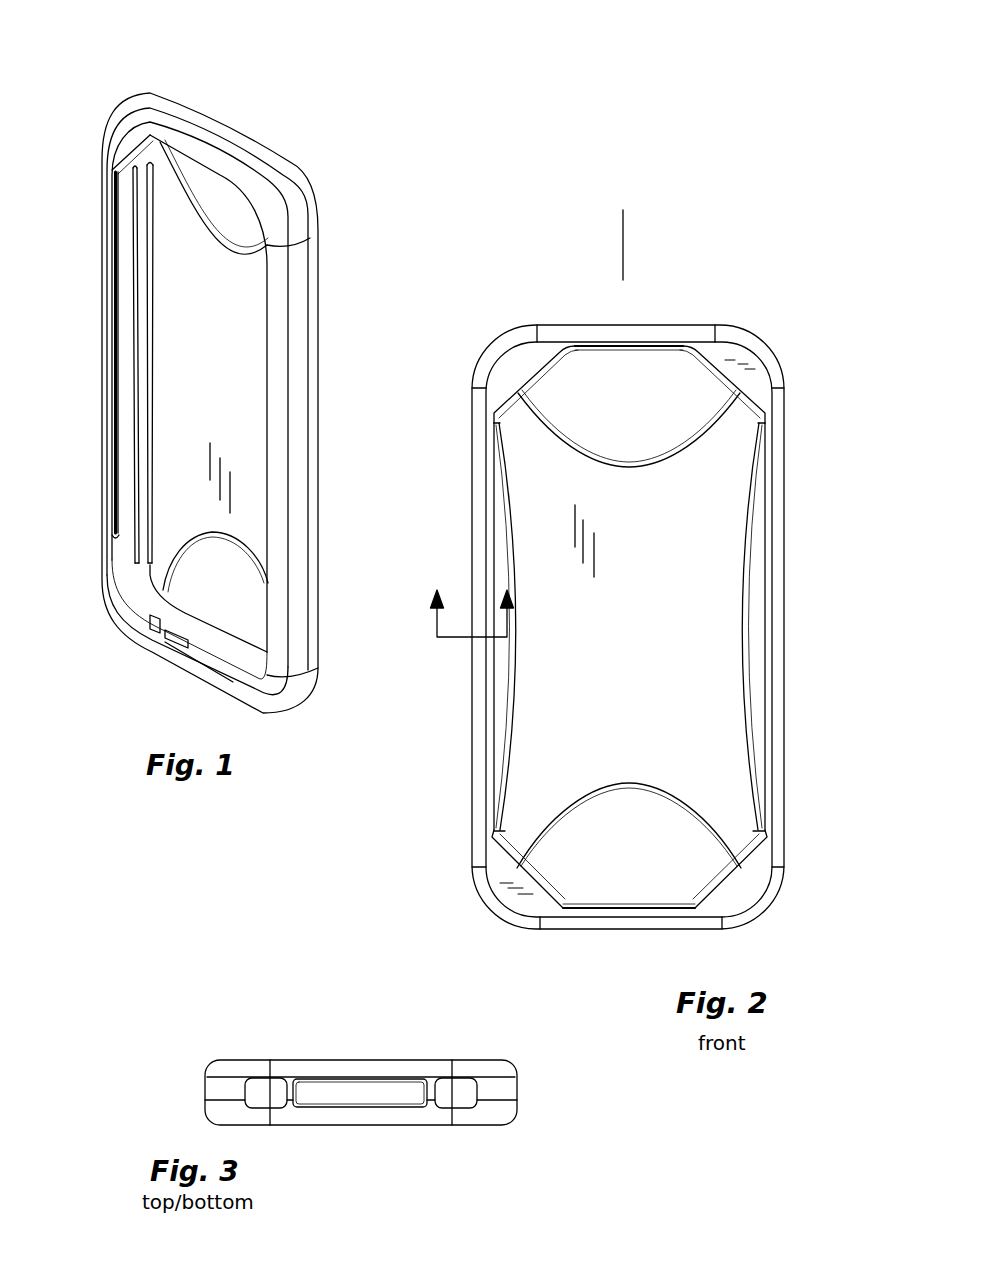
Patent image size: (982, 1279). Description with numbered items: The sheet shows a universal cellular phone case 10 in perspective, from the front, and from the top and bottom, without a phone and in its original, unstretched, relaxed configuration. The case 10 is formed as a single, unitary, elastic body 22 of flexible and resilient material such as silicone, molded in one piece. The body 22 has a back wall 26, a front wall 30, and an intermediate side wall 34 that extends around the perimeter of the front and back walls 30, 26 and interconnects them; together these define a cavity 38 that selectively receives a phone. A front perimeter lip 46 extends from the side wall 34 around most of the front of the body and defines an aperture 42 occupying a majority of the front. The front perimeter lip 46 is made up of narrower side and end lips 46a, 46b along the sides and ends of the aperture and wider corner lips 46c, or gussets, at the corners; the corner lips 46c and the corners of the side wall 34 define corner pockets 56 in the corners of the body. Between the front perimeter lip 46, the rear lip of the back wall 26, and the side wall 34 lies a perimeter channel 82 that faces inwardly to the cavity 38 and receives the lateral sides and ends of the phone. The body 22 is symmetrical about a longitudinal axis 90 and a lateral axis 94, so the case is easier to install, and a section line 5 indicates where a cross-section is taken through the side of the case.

In FIG. 2, the section line 5 is at (465, 600).
In FIG. 1, the case 10 is at (335, 158).
In FIG. 2, the case 10 is at (765, 302).
In FIG. 3, the case 10 is at (236, 1030).
In FIG. 1, the body 22 is at (307, 250).
In FIG. 2, the body 22 is at (783, 359).
In FIG. 3, the body 22 is at (515, 1062).
In FIG. 1, the back wall 26 is at (237, 387).
In FIG. 2, the back wall 26 is at (697, 507).
In FIG. 3, the back wall 26 is at (347, 1125).
In FIG. 1, the front wall 30 is at (268, 472).
In FIG. 2, the front wall 30 is at (780, 519).
In FIG. 3, the front wall 30 is at (332, 1060).
In FIG. 1, the side wall 34 is at (303, 515).
In FIG. 3, the side wall 34 is at (203, 1091).
In FIG. 1, the cavity 38 is at (190, 297).
In FIG. 2, the cavity 38 is at (700, 763).
In FIG. 1, the aperture 42 is at (112, 407).
In FIG. 2, the aperture 42 is at (764, 690).
In FIG. 1, the front perimeter lip 46 is at (115, 320).
In FIG. 2, the front perimeter lip 46 is at (490, 693).
In FIG. 1, the side lips 46a is at (112, 502).
In FIG. 2, the side lips 46a is at (490, 776).
In FIG. 1, the end lips 46b is at (193, 152).
In FIG. 2, the end lips 46b is at (614, 345).
In FIG. 1, the corner lips 46c is at (120, 133).
In FIG. 2, the corner lips 46c is at (523, 363).
In FIG. 1, the corner pockets 56 is at (135, 585).
In FIG. 1, the perimeter channel 82 is at (118, 221).
In FIG. 2, the longitudinal axis 90 is at (623, 235).
In FIG. 2, the lateral axis 94 is at (797, 630).